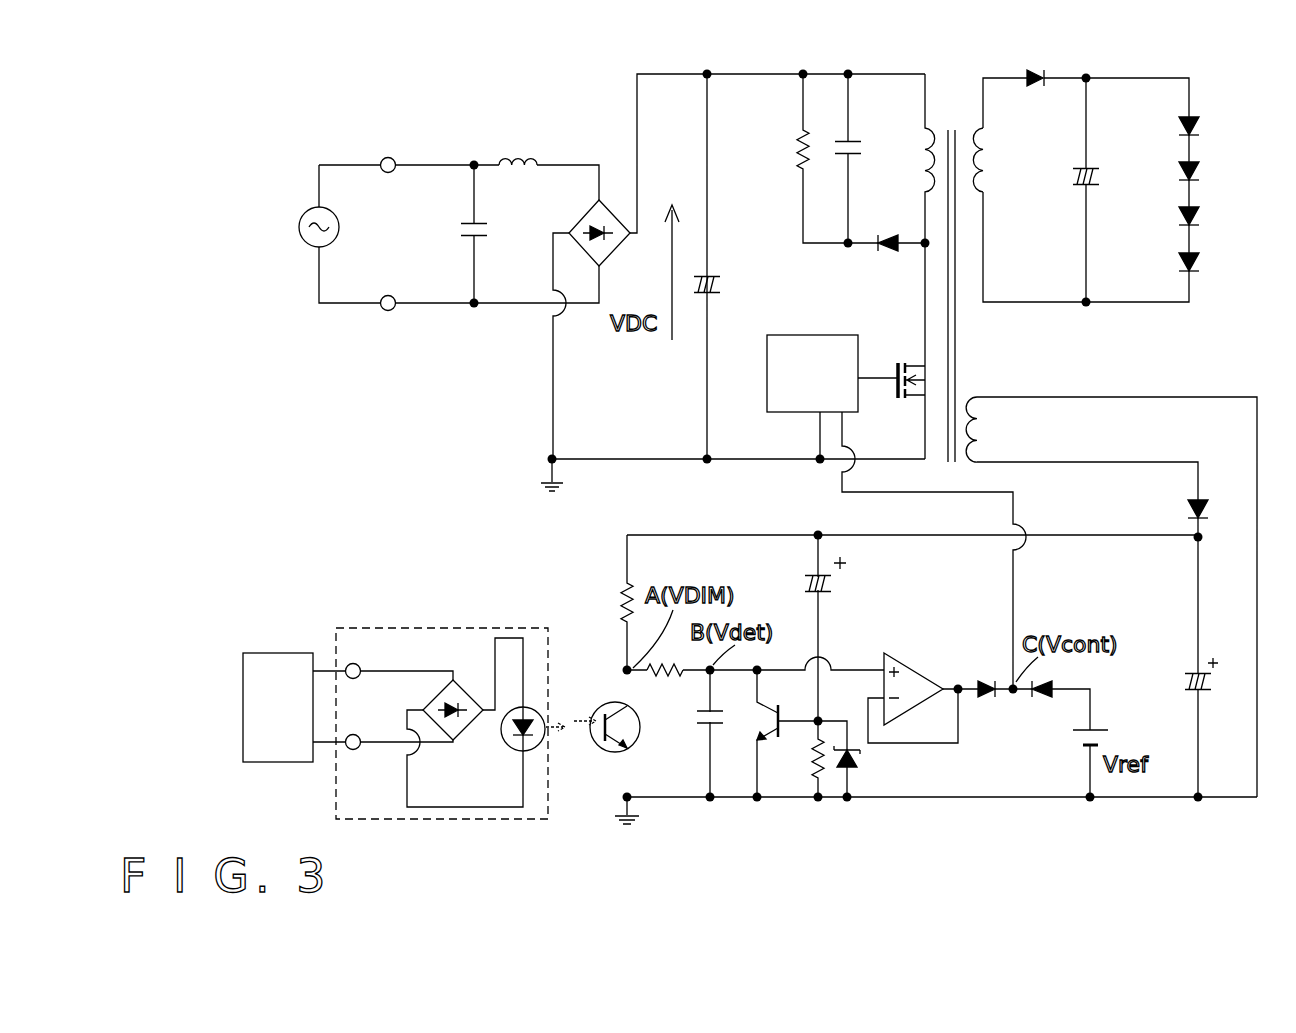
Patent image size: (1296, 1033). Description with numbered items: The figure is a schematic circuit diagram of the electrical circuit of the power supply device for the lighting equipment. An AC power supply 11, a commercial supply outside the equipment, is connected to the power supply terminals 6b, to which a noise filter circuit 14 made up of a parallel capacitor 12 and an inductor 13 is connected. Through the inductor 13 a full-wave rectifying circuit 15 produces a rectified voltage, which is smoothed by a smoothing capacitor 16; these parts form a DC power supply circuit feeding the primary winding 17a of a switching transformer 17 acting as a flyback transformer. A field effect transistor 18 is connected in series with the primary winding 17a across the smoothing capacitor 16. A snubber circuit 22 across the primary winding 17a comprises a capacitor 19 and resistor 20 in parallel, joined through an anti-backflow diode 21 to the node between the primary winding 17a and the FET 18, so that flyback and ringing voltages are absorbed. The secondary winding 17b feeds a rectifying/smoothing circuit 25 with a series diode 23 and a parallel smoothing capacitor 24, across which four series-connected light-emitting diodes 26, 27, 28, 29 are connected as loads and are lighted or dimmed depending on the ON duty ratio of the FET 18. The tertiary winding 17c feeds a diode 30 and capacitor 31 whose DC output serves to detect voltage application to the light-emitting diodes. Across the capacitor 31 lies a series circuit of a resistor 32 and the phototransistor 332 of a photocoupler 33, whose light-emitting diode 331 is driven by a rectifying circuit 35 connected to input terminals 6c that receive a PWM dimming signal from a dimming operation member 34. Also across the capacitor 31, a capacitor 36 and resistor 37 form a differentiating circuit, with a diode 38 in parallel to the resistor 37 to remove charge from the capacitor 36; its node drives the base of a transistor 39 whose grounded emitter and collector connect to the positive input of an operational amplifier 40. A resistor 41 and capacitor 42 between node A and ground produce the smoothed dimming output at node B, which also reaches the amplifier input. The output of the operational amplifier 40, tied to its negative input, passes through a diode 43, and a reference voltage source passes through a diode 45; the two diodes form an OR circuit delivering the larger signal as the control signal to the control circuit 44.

The power supply terminals 6b is at (388, 157).
The AC power supply 11 is at (341, 227).
The capacitor 12 is at (455, 235).
The inductor 13 is at (513, 152).
The noise filter circuit 14 is at (531, 224).
The full-wave rectifying circuit 15 is at (615, 256).
The smoothing capacitor 16 is at (712, 297).
The switching transformer 17 is at (961, 260).
The primary winding 17a is at (917, 150).
The secondary winding 17b is at (991, 157).
The tertiary winding 17c is at (988, 432).
The field effect transistor 18 is at (911, 397).
The capacitor 19 is at (853, 137).
The resistor 20 is at (795, 160).
The anti-backflow diode 21 is at (888, 253).
The snubber circuit 22 is at (838, 204).
The diode 23 is at (1042, 68).
The smoothing capacitor 24 is at (1102, 179).
The rectifying/smoothing circuit 25 is at (1062, 139).
The light-emitting diode 26 is at (1200, 127).
The light-emitting diode 27 is at (1200, 172).
The light-emitting diode 28 is at (1200, 217).
The light-emitting diode 29 is at (1200, 262).
The diode 30 is at (1205, 494).
The capacitor 31 is at (1210, 657).
The resistor 32 is at (620, 592).
The photocoupler 33 is at (488, 747).
The light-emitting diode 331 is at (507, 753).
The phototransistor 332 is at (607, 755).
The dimming operation member 34 is at (275, 652).
The rectifying circuit 35 is at (468, 685).
The capacitor 36 is at (841, 585).
The resistor 37 is at (812, 758).
The diode 38 is at (858, 758).
The transistor 39 is at (757, 727).
The operational amplifier 40 is at (917, 668).
The resistor 41 is at (668, 678).
The capacitor 42 is at (700, 725).
The diode 43 is at (988, 700).
The control circuit 44 is at (799, 412).
The diode 45 is at (1040, 698).
The input terminals 6c is at (355, 663).